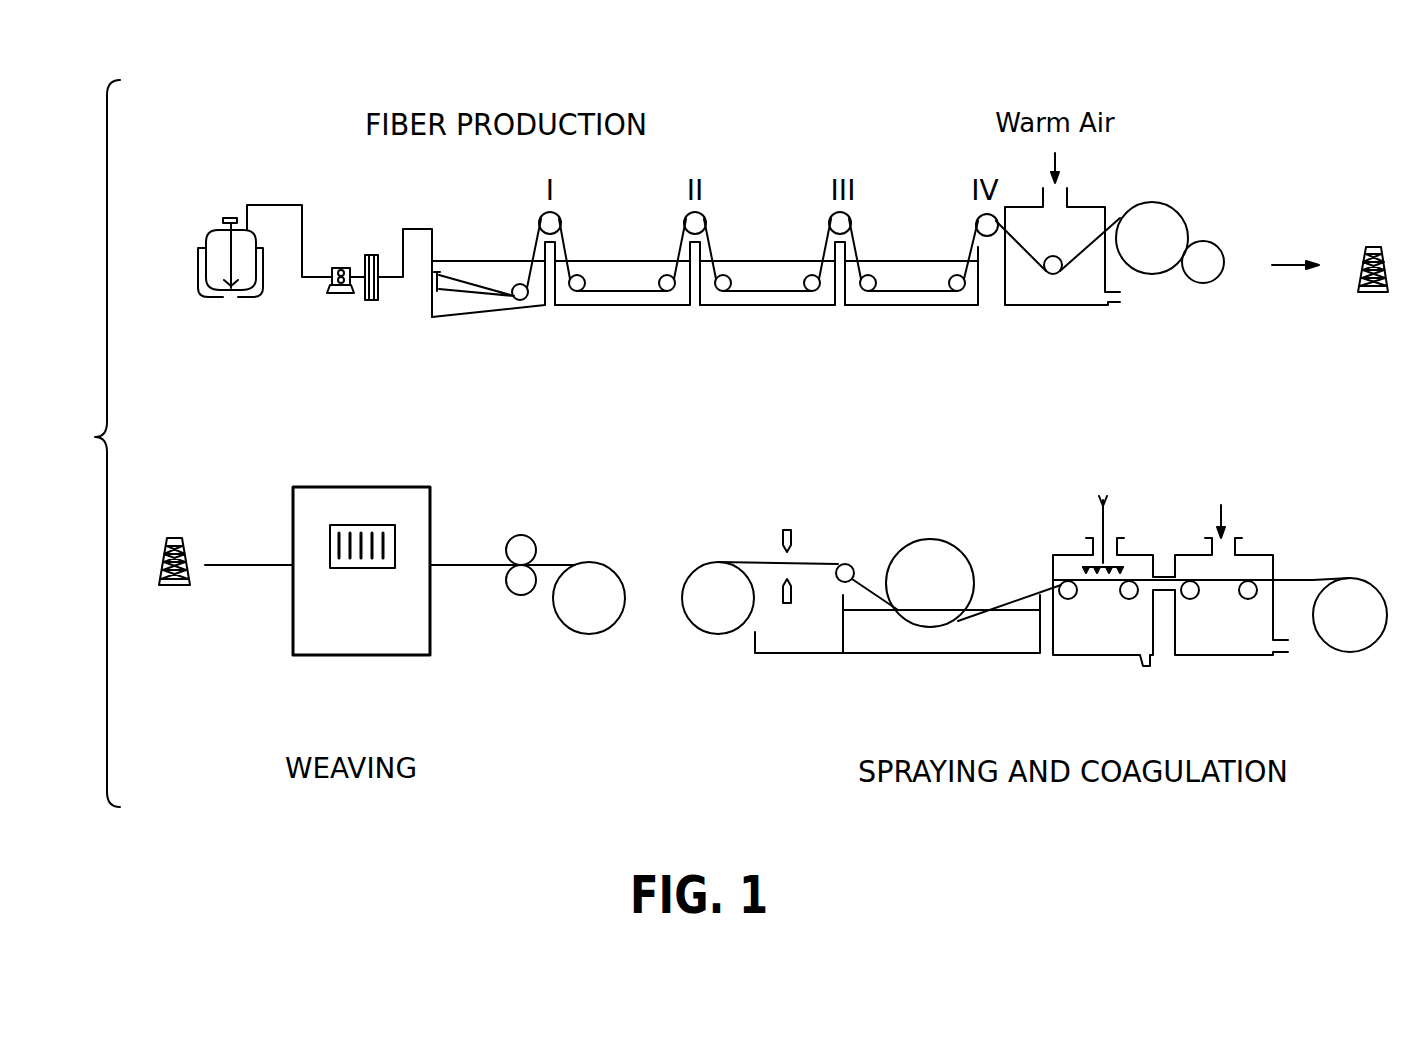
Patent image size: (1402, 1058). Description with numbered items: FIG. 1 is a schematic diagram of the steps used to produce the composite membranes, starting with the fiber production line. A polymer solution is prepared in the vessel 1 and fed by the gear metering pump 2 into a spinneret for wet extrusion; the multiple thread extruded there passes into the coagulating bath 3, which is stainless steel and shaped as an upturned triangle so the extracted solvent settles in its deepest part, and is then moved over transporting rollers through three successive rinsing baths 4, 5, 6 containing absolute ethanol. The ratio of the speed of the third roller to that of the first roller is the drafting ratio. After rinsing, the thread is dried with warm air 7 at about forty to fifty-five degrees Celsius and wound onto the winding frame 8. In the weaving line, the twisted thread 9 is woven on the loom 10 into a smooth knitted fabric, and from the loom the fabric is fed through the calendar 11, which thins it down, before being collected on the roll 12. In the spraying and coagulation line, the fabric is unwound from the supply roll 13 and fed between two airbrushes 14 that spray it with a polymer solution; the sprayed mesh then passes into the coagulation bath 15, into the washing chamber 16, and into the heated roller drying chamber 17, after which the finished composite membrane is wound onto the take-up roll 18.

The vessel 1 is at (264, 288).
The gear metering pump 2 is at (379, 300).
The coagulating bath 3 is at (501, 292).
The rinsing bath 4 is at (635, 292).
The rinsing bath 5 is at (780, 292).
The rinsing bath 6 is at (921, 293).
The warm air drying 7 is at (1058, 280).
The winding frame 8 is at (1170, 287).
The twisted thread supply 9 is at (226, 624).
The loom 10 is at (399, 599).
The calendar 11 is at (529, 623).
The fabric take-up roll 12 is at (589, 636).
The fabric supply roll 13 is at (760, 636).
The airbrushes 14 is at (840, 553).
The coagulation bath 15 is at (908, 625).
The washing chamber 16 is at (1114, 583).
The heated roller drying chamber 17 is at (1243, 583).
The finished fabric wind-up roll 18 is at (1350, 644).